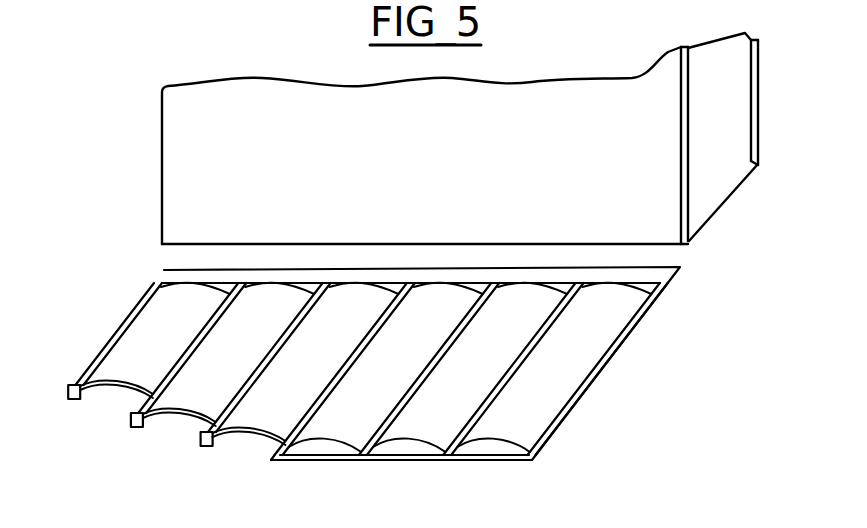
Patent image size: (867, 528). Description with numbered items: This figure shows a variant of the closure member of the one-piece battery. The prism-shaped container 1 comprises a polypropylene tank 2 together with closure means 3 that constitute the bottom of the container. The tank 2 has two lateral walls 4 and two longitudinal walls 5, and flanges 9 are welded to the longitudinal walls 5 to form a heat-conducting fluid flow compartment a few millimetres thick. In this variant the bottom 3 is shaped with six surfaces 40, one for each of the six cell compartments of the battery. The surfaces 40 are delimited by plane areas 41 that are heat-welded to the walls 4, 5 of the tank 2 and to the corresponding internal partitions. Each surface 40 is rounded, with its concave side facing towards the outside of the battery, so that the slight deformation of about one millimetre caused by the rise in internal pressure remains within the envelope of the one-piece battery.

The container 1 is at (116, 166).
The tank 2 is at (734, 198).
The closure means 3 is at (369, 383).
The lateral wall 4 is at (728, 125).
The longitudinal wall 5 is at (693, 241).
The flange 9 is at (172, 218).
The surface 40 is at (217, 348).
The plane area 41 is at (493, 395).